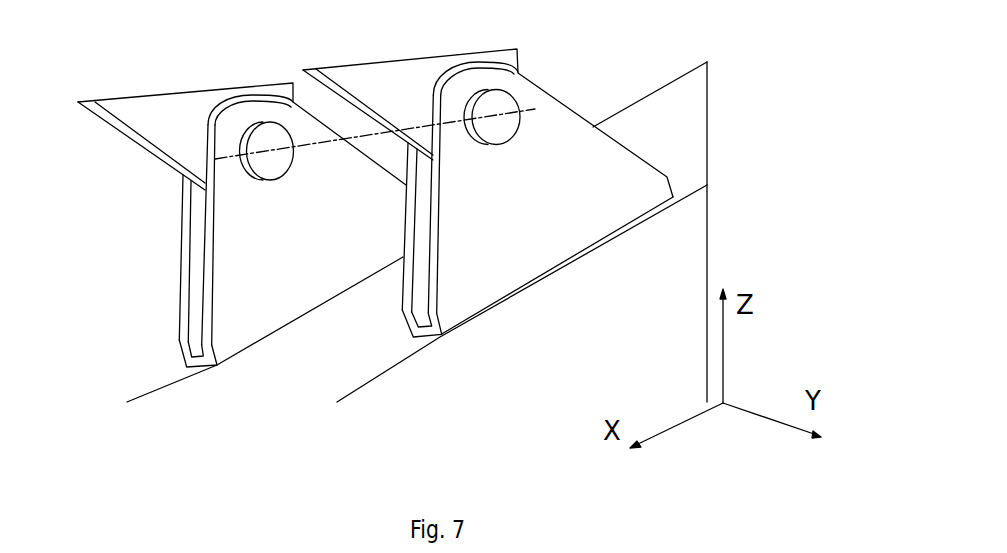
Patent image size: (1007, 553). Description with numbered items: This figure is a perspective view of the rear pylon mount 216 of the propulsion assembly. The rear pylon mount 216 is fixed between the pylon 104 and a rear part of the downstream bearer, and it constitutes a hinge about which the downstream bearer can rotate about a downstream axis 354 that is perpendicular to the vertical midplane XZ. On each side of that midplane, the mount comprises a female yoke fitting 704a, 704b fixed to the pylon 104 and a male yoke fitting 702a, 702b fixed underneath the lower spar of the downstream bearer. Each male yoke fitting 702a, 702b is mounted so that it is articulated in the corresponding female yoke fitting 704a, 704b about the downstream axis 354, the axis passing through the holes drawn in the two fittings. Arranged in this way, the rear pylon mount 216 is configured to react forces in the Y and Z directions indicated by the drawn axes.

The rear pylon mount 216 is at (426, 202).
The pylon 104 is at (362, 366).
The male yoke fitting 702a is at (178, 146).
The male yoke fitting 702b is at (518, 62).
The female yoke fitting 704a is at (197, 318).
The female yoke fitting 704b is at (643, 195).
The downstream axis 354 is at (498, 119).